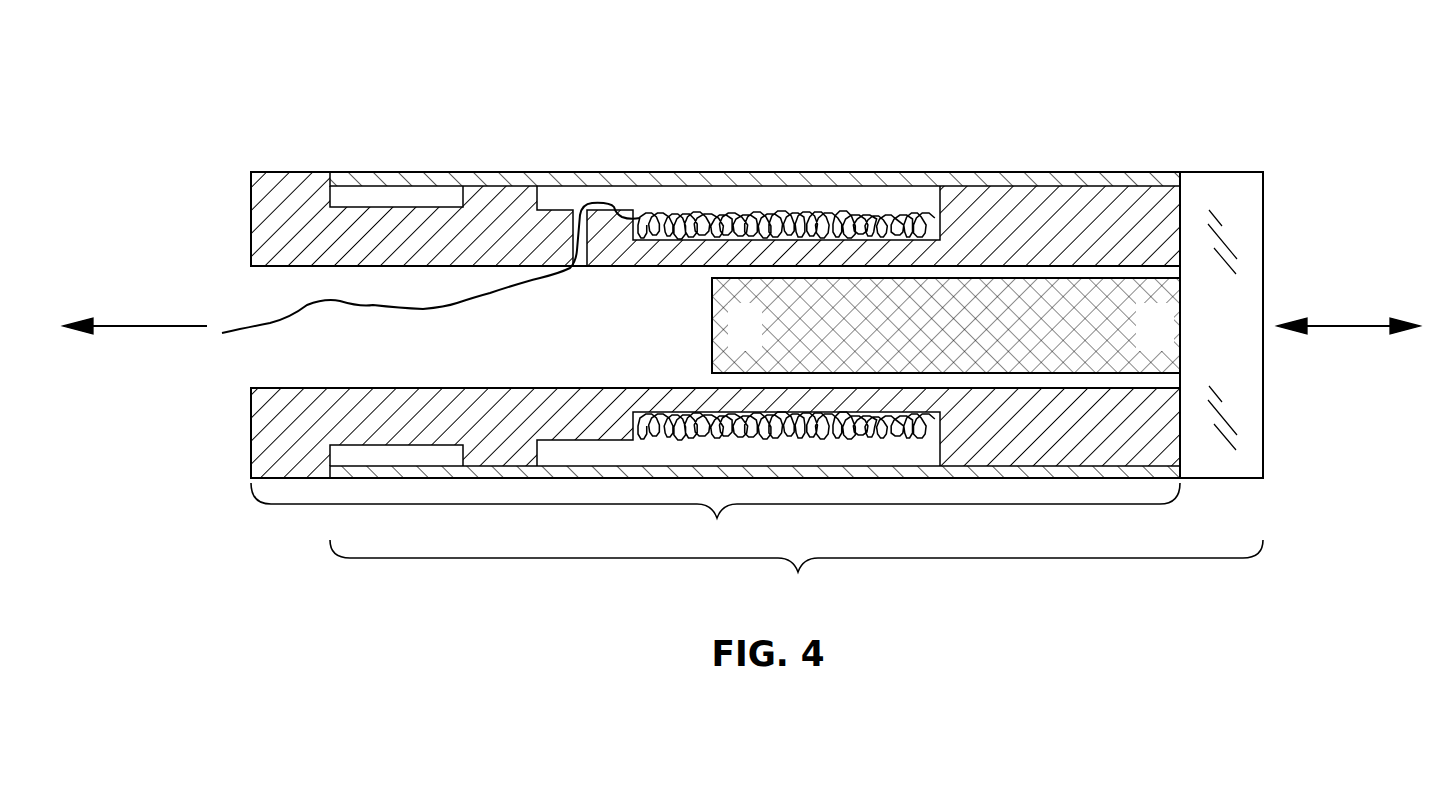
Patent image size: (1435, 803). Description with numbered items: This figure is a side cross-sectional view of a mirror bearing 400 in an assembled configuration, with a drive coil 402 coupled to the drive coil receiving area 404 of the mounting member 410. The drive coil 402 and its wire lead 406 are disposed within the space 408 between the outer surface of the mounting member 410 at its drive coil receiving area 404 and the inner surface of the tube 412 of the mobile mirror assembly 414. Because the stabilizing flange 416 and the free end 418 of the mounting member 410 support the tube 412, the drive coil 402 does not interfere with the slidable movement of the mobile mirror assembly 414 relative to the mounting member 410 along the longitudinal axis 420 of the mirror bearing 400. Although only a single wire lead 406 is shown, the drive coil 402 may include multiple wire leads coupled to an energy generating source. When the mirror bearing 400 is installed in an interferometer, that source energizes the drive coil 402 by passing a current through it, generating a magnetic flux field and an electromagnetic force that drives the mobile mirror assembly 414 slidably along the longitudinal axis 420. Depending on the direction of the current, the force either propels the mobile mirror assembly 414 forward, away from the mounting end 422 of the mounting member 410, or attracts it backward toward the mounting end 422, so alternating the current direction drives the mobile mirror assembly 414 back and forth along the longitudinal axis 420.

The mirror bearing 400 is at (968, 100).
The drive coil 402 is at (792, 211).
The drive coil receiving area 404 is at (922, 198).
The wire lead 406 is at (383, 308).
The space 408 is at (658, 198).
The mounting member 410 is at (715, 469).
The tube 412 is at (1100, 177).
The mobile mirror assembly 414 is at (796, 534).
The stabilizing flange 416 is at (487, 200).
The free end 418 is at (1035, 197).
The longitudinal axis 420 is at (1342, 327).
The mounting end 422 is at (250, 198).